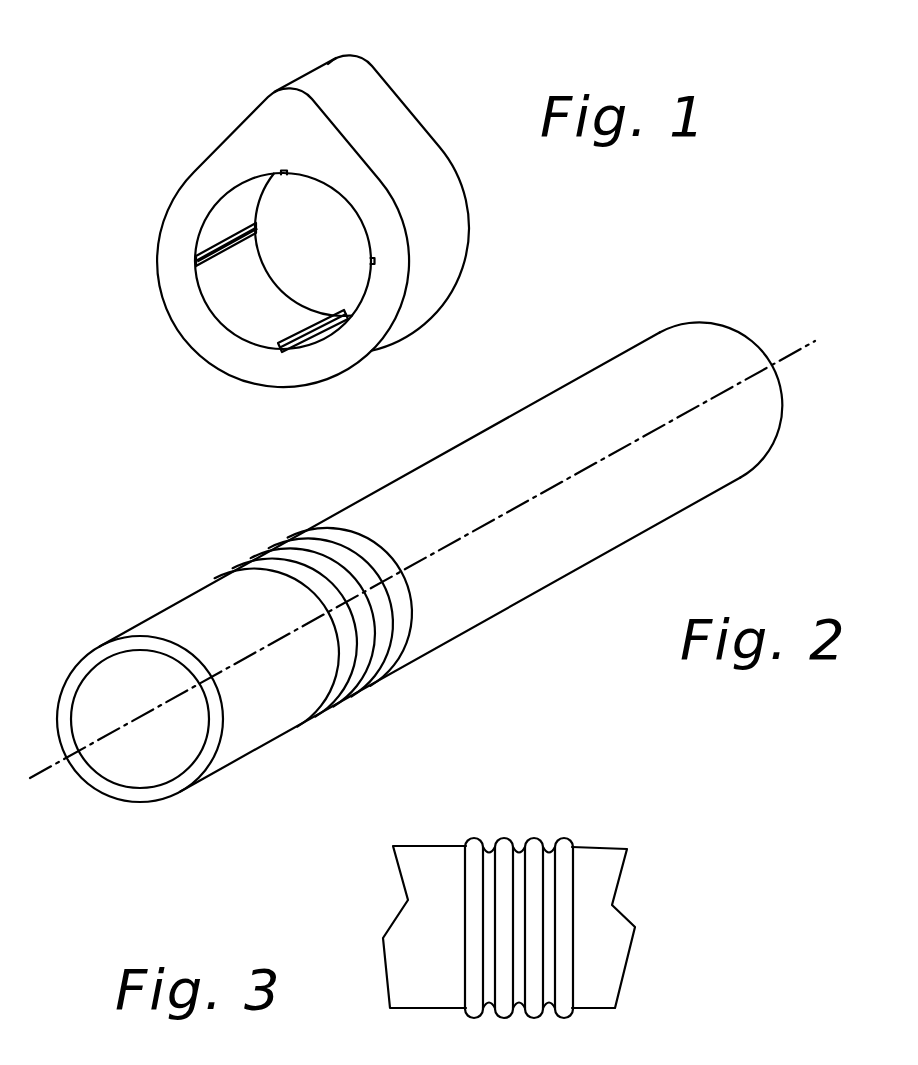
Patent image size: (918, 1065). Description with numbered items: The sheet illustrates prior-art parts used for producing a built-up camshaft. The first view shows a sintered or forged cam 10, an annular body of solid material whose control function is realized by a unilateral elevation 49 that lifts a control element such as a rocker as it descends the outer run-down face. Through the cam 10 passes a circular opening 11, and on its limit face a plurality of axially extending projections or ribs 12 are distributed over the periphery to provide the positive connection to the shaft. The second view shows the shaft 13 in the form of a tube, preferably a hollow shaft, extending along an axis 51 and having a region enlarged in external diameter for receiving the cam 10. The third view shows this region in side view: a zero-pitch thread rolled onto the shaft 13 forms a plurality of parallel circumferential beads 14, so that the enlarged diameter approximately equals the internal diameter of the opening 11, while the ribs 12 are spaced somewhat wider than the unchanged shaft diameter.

In FIG. 1, the cam 10 is at (453, 263).
In FIG. 1, the circular opening 11 is at (237, 318).
In FIG. 1, the projections or ribs 12 is at (197, 263).
In FIG. 2, the shaft 13 is at (167, 628).
In FIG. 3, the shaft 13 is at (607, 960).
In FIG. 2, the circumferential beads 14 is at (360, 690).
In FIG. 3, the circumferential beads 14 is at (533, 842).
In FIG. 1, the unilateral elevation 49 is at (323, 72).
In FIG. 2, the axis 51 is at (30, 778).